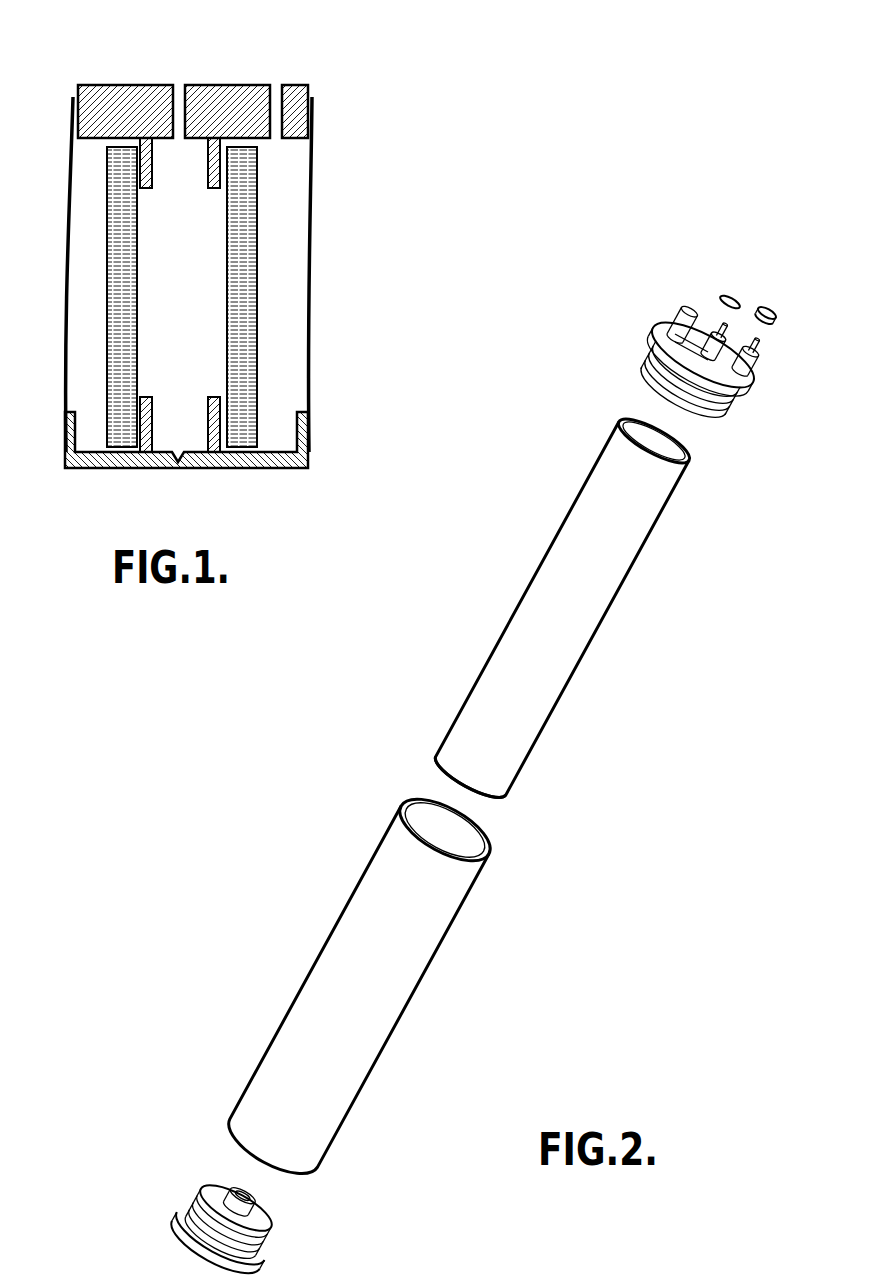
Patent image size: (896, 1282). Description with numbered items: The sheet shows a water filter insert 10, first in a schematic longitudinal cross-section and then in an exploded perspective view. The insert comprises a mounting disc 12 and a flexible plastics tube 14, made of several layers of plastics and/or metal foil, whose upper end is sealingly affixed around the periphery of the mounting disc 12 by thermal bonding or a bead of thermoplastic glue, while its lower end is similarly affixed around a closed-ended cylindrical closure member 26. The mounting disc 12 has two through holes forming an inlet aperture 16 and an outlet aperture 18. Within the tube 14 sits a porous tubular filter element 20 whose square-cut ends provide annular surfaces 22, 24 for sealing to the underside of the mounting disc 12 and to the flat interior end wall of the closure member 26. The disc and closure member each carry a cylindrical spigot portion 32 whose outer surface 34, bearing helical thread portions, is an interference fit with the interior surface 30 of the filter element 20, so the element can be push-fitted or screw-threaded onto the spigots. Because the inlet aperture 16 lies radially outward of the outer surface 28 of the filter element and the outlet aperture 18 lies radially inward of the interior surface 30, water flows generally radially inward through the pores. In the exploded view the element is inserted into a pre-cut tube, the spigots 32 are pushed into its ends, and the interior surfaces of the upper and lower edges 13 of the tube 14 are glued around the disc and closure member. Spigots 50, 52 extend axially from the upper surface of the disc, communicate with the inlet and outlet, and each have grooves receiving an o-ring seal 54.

In FIG. 1, the filter insert 10 is at (333, 163).
In FIG. 2, the filter insert 10 is at (358, 775).
In FIG. 1, the mounting disc 12 is at (194, 102).
In FIG. 2, the mounting disc 12 is at (697, 324).
In FIG. 2, the upper and lower edges of the flexible tube 13 is at (692, 444).
In FIG. 1, the flexible plastics tube 14 is at (68, 355).
In FIG. 2, the flexible plastics tube 14 is at (338, 952).
In FIG. 1, the inlet aperture 16 is at (278, 92).
In FIG. 2, the inlet aperture 16 is at (762, 351).
In FIG. 1, the outlet aperture 18 is at (182, 96).
In FIG. 2, the outlet aperture 18 is at (673, 322).
In FIG. 1, the tubular filter element 20 is at (200, 297).
In FIG. 2, the tubular filter element 20 is at (583, 619).
In FIG. 1, the annular surface 22 is at (122, 148).
In FIG. 1, the annular surface 24 is at (122, 443).
In FIG. 1, the closure member 26 is at (278, 464).
In FIG. 2, the closure member 26 is at (234, 1192).
In FIG. 1, the outer surface of the filter element 28 is at (253, 285).
In FIG. 1, the interior surface of the filter element 30 is at (143, 187).
In FIG. 1, the cylindrical spigot portion 32 is at (147, 195).
In FIG. 2, the cylindrical spigot portion 32 is at (267, 1198).
In FIG. 1, the outer surface of the spigot 34 is at (220, 420).
In FIG. 2, the spigot 50 is at (663, 326).
In FIG. 2, the spigot 52 is at (752, 386).
In FIG. 2, the o-ring seal 54 is at (721, 292).